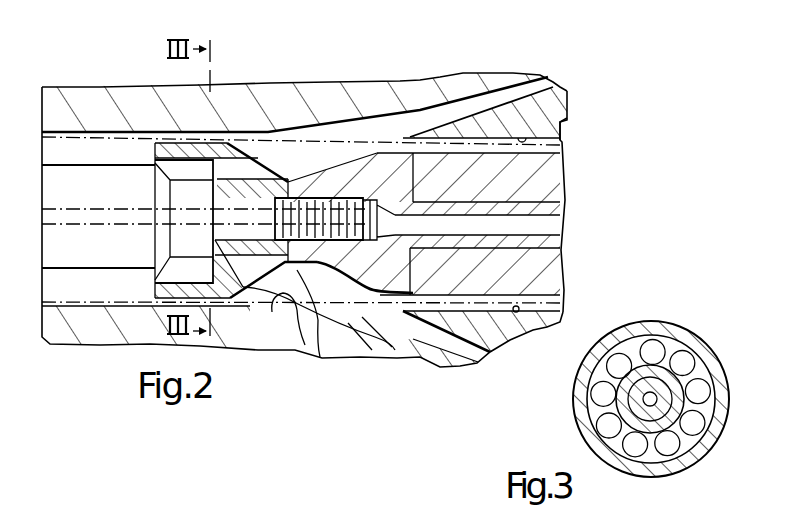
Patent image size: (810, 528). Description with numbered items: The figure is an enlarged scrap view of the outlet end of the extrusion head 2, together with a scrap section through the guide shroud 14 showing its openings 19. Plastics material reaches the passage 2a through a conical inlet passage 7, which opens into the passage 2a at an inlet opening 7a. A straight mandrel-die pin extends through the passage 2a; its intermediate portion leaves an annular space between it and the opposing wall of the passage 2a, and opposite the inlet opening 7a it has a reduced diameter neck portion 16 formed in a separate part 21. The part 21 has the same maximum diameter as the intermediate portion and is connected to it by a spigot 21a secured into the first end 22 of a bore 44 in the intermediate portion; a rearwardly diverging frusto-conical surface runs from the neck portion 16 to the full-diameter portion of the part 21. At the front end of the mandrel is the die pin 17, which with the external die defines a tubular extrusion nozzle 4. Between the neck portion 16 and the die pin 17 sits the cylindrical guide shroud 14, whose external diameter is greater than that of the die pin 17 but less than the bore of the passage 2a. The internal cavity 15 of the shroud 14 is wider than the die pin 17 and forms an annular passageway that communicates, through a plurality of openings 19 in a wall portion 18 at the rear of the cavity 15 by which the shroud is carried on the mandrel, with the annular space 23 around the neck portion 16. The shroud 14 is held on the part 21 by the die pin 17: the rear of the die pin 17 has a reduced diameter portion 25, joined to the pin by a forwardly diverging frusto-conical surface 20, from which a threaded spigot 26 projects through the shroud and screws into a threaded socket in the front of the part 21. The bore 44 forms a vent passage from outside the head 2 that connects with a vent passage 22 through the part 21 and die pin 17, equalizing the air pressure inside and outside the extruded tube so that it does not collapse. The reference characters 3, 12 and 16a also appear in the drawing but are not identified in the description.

In FIG. 2, the extrusion head 2 is at (357, 350).
In FIG. 2, the passage 2a is at (567, 110).
In FIG. 2, the insert body 3 is at (542, 275).
In FIG. 2, the tubular extrusion nozzle 4 is at (95, 156).
In FIG. 2, the conical inlet passage 7 is at (550, 81).
In FIG. 2, the inlet opening 7a is at (352, 132).
In FIG. 2, the lever 12 is at (301, 346).
In FIG. 2, the cylindrical guide shroud 14 is at (197, 142).
In FIG. 3, the cylindrical guide shroud 14 is at (659, 322).
In FIG. 2, the internal cavity 15 is at (153, 160).
In FIG. 2, the reduced diameter neck portion 16 is at (383, 305).
In FIG. 2, the nut flange 16a is at (362, 173).
In FIG. 2, the die pin 17 is at (96, 260).
In FIG. 2, the wall portion 18 is at (320, 357).
In FIG. 2, the openings 19 is at (262, 171).
In FIG. 3, the openings 19 is at (700, 425).
In FIG. 2, the forwardly diverging frusto-conical surface 20 is at (164, 168).
In FIG. 2, the part 21 is at (432, 118).
In FIG. 2, the spigot 21a is at (557, 242).
In FIG. 2, the vent passage 22 is at (62, 218).
In FIG. 2, the annular space 23 is at (267, 150).
In FIG. 2, the reduced diameter portion 25 is at (252, 283).
In FIG. 2, the threaded spigot 26 is at (398, 178).
In FIG. 2, the bore 44 is at (540, 192).